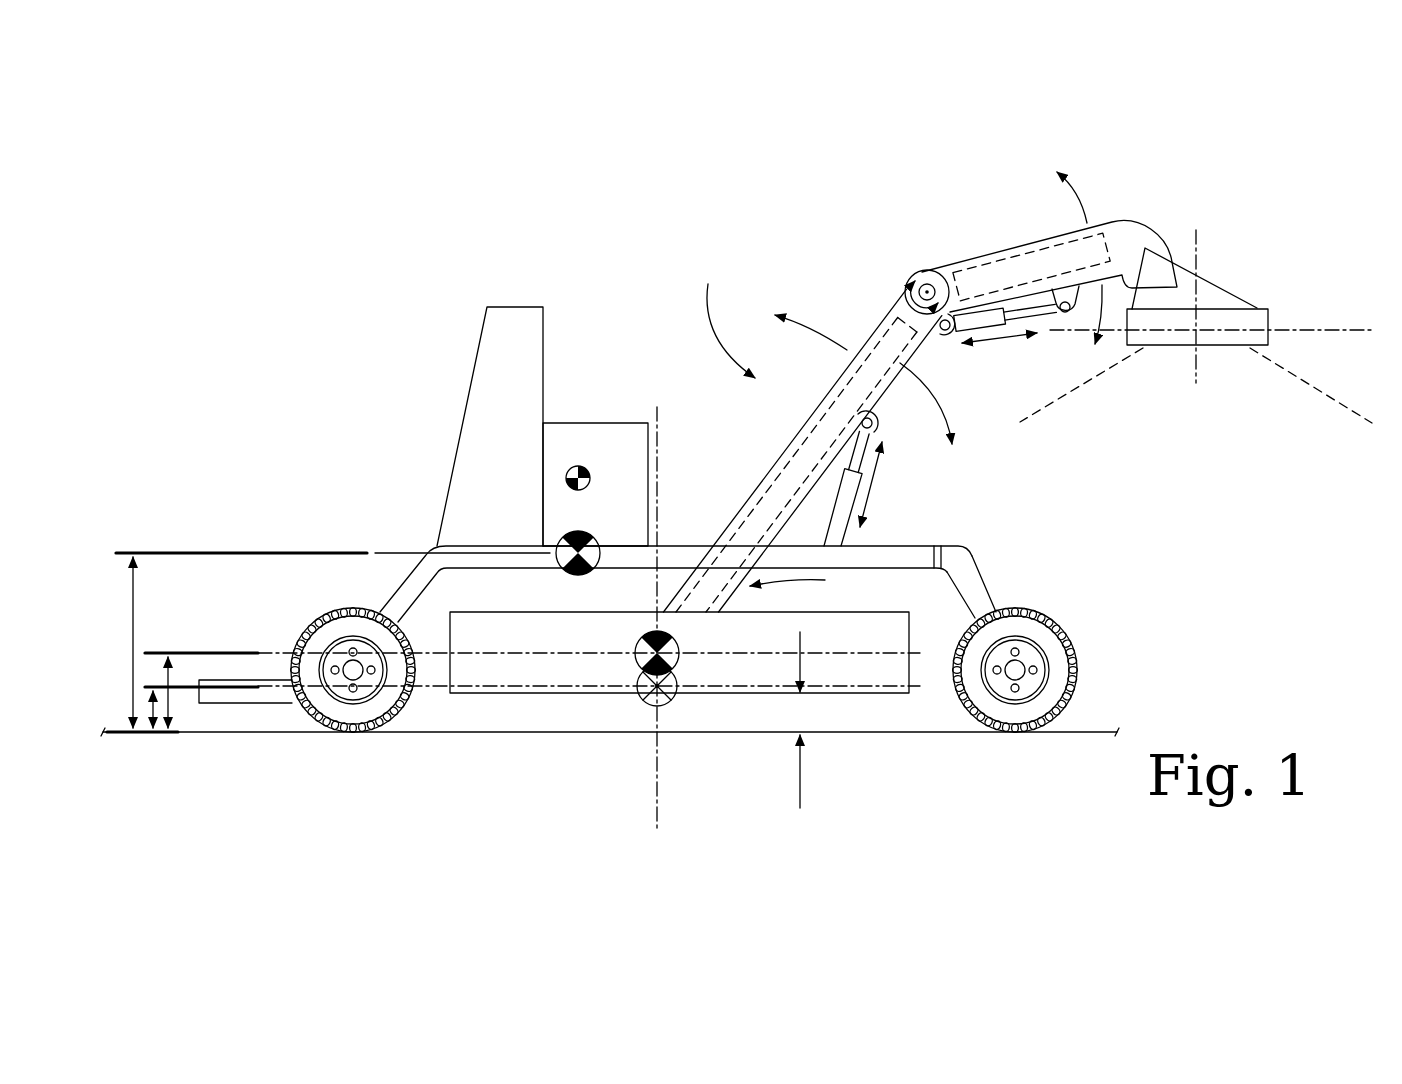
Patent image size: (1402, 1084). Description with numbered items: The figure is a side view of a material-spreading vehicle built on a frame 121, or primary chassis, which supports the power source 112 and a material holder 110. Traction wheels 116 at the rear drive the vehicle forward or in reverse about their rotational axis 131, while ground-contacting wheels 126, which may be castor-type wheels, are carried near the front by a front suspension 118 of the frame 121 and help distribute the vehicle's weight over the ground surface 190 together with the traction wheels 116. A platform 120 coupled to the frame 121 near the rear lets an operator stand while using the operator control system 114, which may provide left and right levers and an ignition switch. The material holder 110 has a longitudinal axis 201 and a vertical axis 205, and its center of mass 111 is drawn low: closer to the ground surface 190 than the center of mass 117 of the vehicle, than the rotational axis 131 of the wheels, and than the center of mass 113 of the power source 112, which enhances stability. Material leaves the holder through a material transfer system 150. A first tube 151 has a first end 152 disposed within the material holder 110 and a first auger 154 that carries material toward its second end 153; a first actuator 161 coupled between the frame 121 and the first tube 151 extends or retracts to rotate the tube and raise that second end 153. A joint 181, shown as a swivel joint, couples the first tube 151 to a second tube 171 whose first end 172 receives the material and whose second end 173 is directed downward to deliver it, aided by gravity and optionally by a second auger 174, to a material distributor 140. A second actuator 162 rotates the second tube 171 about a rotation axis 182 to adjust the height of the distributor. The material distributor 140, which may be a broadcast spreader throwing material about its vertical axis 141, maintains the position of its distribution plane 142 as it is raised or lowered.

The material holder 110 is at (710, 700).
The center of mass of the material holder 111 is at (677, 643).
The power source 112 is at (590, 424).
The center of mass of the power source 113 is at (583, 466).
The operator control system 114 is at (477, 358).
The traction wheels 116 is at (315, 628).
The center of mass of the vehicle 117 is at (585, 572).
The front suspension 118 is at (950, 516).
The platform 120 is at (245, 705).
The frame 121 is at (975, 565).
The ground-contacting wheels 126 is at (1055, 622).
The rotational axis 131 is at (355, 673).
The material distributor 140 is at (1167, 347).
The vertical axis of the material distributor 141 is at (1196, 258).
The distribution plane 142 is at (1335, 330).
The material transfer system 150 is at (767, 319).
The first tube 151 is at (893, 382).
The first end of the first tube 152 is at (808, 580).
The second end of the first tube 153 is at (898, 297).
The first auger 154 is at (787, 477).
The first actuator 161 is at (838, 540).
The second actuator 162 is at (957, 330).
The second tube 171 is at (987, 257).
The first end of the second tube 172 is at (942, 262).
The second end of the second tube 173 is at (1165, 258).
The second auger 174 is at (1043, 260).
The joint 181 is at (915, 273).
The rotation axis 182 is at (925, 288).
The ground surface 190 is at (1085, 735).
The longitudinal axis 201 is at (887, 655).
The vertical axis of the material holder 205 is at (655, 785).